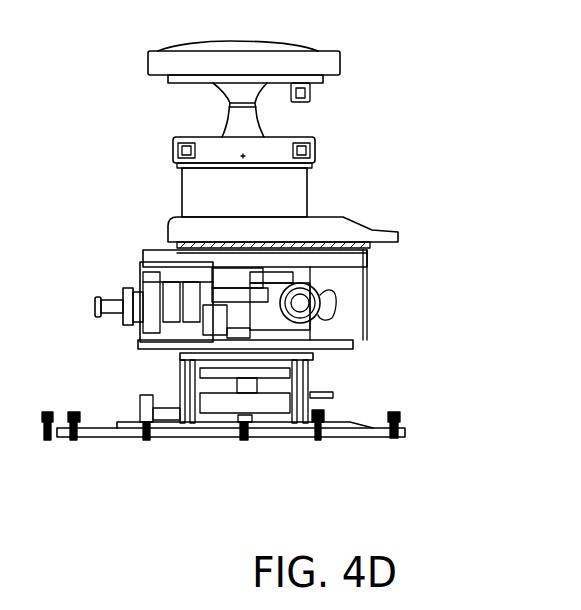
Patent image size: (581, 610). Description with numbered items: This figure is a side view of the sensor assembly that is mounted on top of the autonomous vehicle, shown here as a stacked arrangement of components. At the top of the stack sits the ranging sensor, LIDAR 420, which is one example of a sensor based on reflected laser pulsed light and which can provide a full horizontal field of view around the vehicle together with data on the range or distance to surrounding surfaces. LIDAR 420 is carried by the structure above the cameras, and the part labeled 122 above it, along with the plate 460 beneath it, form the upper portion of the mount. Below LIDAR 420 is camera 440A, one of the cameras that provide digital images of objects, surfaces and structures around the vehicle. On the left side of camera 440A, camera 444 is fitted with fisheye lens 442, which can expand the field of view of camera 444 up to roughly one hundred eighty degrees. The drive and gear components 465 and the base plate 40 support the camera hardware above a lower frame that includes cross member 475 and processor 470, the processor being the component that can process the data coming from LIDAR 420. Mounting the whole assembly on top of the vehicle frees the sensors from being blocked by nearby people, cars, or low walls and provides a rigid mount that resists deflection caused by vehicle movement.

The knob / handle 122 is at (340, 60).
The LIDAR 420 is at (307, 188).
The upper plate 460 is at (213, 277).
The camera 440A is at (118, 342).
The camera 444 is at (128, 286).
The fisheye lens 442 is at (100, 297).
The gear 465 is at (328, 322).
The base plate 40 is at (355, 343).
The frame cross member 475 is at (313, 362).
The processor 470 is at (313, 383).